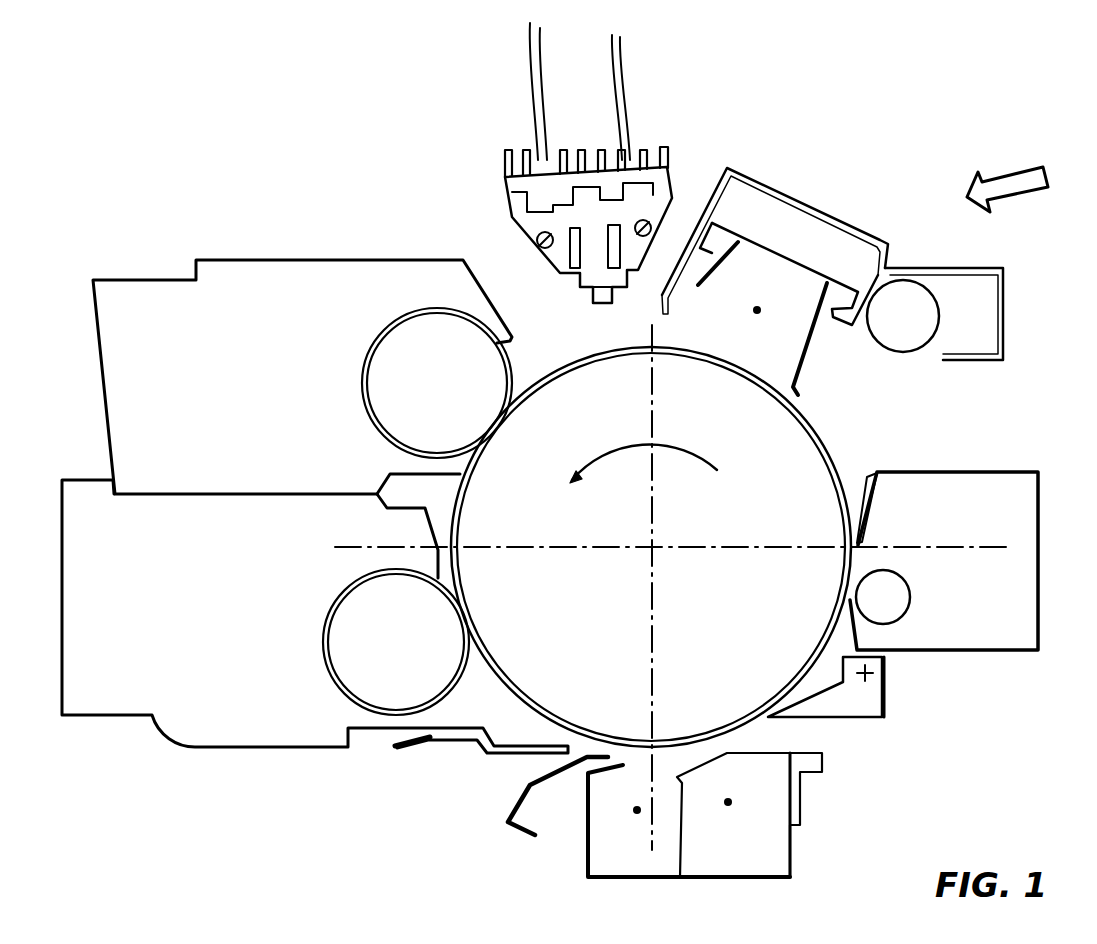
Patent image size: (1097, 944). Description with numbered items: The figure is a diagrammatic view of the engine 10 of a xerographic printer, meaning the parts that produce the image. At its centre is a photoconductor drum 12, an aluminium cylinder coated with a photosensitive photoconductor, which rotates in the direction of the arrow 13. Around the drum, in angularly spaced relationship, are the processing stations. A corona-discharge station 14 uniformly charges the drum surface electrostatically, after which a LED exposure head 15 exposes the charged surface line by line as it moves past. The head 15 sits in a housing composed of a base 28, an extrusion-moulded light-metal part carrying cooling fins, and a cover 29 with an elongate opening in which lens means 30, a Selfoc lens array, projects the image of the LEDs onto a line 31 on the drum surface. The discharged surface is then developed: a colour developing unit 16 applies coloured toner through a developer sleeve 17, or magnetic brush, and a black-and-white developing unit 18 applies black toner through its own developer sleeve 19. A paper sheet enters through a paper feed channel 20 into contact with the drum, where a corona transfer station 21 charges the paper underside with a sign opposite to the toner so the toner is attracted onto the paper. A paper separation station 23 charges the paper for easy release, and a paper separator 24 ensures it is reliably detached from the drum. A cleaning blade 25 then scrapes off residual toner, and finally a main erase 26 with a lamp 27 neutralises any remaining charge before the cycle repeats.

The engine 10 is at (1017, 187).
The photoconductor drum 12 is at (672, 587).
The arrow 13 is at (703, 458).
The corona-discharge station 14 is at (790, 197).
The LED exposure head 15 is at (566, 175).
The colour developing unit 16 is at (262, 272).
The developer sleeve 17 is at (413, 335).
The black-and-white developing unit 18 is at (218, 727).
The developer sleeve 19 is at (380, 700).
The paper feed channel 20 is at (522, 778).
The corona transfer station 21 is at (600, 863).
The paper separation station 23 is at (770, 858).
The paper separator 24 is at (865, 707).
The cleaning blade 25 is at (863, 523).
The main erase 26 is at (1004, 297).
The lamp 27 is at (913, 333).
The base 28 is at (662, 148).
The cover 29 is at (653, 207).
The lens means 30 is at (590, 295).
The line 31 is at (603, 348).